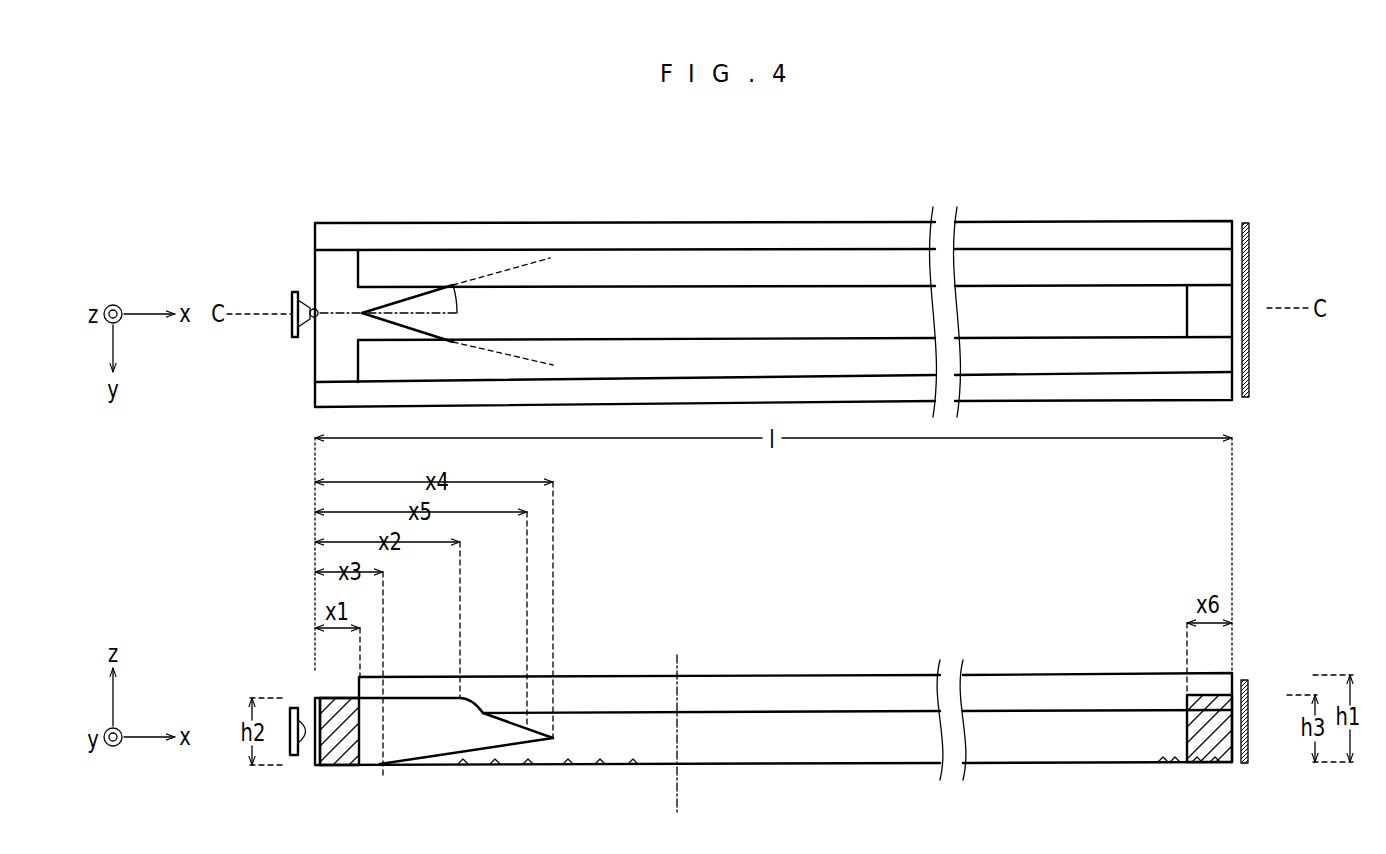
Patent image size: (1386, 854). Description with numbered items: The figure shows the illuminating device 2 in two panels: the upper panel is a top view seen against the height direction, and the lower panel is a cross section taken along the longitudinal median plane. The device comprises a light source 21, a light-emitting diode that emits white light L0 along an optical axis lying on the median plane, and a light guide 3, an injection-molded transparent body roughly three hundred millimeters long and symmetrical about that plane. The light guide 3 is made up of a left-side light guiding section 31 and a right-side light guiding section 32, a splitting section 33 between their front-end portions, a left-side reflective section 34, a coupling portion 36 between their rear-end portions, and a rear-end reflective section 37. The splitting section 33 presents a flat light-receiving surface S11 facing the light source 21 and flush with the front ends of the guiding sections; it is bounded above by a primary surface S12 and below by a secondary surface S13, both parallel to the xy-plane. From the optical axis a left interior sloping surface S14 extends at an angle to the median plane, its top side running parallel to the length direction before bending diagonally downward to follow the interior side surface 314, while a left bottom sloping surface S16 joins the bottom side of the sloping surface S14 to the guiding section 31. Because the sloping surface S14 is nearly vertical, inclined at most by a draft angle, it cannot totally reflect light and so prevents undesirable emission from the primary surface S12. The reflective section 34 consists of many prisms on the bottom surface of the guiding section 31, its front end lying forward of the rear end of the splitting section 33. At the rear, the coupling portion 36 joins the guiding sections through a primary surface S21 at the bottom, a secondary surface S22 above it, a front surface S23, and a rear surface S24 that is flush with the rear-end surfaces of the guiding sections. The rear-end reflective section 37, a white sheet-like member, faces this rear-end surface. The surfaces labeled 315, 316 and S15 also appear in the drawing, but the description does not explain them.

The illuminating device 2 is at (291, 483).
The light guide 3 is at (811, 219).
The light source 21 is at (296, 339).
The left-side light guiding section 31 is at (737, 233).
The right-side light guiding section 32 is at (737, 363).
The splitting section 33 is at (385, 284).
The left-side reflective section 34 is at (462, 768).
The coupling portion 36 is at (1251, 288).
The rear-end reflective section 37 is at (1252, 350).
The interior side surface 314 is at (508, 752).
The side surface 315 is at (620, 230).
The top surface 316 is at (550, 258).
The light-receiving surface S11 is at (313, 330).
The primary surface S12 is at (417, 295).
The secondary surface S13 is at (360, 767).
The left interior sloping surface S14 is at (513, 270).
The curved surface S15 is at (483, 276).
The left bottom sloping surface S16 is at (500, 748).
The primary surface S21 is at (1213, 765).
The secondary surface S22 is at (1210, 693).
The front surface S23 is at (1183, 305).
The rear surface S24 is at (1233, 348).
The light L0 is at (310, 294).